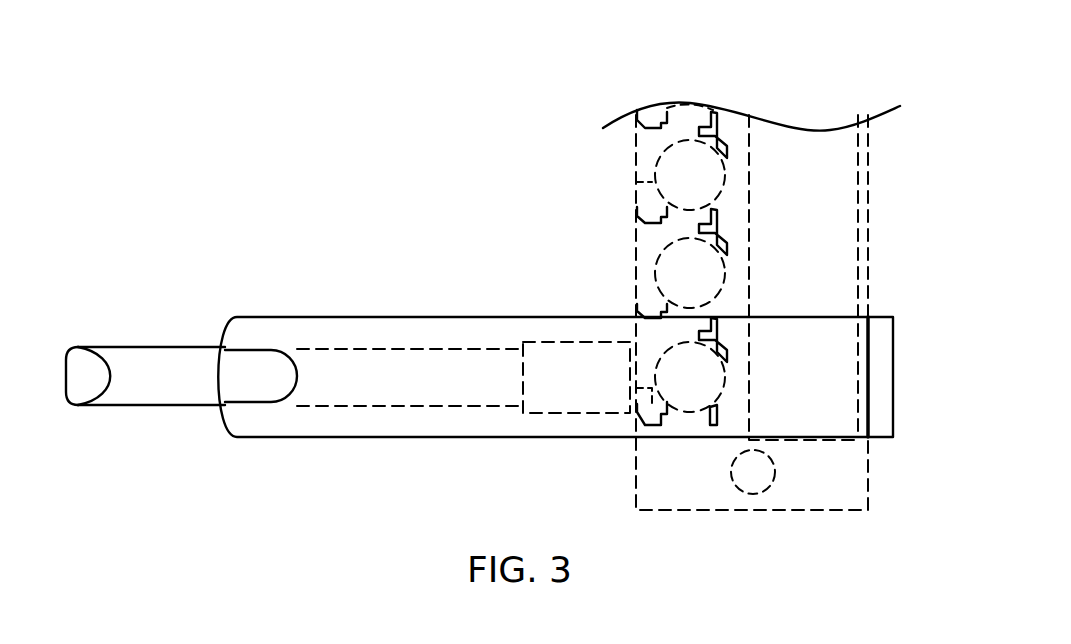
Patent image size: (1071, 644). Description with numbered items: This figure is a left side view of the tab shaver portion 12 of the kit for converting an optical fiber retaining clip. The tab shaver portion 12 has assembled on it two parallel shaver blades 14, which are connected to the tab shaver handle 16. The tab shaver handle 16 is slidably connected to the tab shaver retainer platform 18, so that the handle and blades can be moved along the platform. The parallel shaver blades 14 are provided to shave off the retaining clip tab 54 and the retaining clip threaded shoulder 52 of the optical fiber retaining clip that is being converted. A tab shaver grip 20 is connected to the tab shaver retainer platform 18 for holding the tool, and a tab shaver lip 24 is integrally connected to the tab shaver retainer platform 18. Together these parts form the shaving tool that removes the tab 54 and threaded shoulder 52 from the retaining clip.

The tab shaver portion 12 is at (438, 208).
The parallel shaver blades 14 is at (550, 413).
The tab shaver handle 16 is at (88, 390).
The tab shaver retainer platform 18 is at (818, 426).
The tab shaver grip 20 is at (248, 383).
The tab shaver lip 24 is at (880, 335).
The retaining clip threaded shoulder 52 is at (697, 412).
The retaining clip tab 54 is at (717, 342).